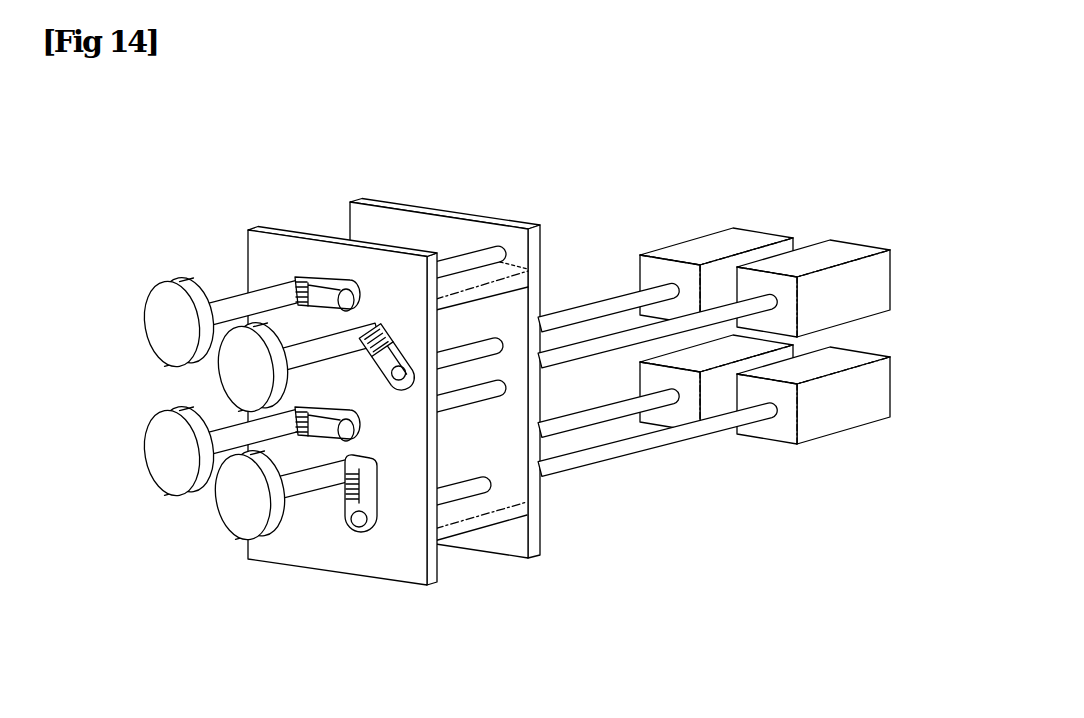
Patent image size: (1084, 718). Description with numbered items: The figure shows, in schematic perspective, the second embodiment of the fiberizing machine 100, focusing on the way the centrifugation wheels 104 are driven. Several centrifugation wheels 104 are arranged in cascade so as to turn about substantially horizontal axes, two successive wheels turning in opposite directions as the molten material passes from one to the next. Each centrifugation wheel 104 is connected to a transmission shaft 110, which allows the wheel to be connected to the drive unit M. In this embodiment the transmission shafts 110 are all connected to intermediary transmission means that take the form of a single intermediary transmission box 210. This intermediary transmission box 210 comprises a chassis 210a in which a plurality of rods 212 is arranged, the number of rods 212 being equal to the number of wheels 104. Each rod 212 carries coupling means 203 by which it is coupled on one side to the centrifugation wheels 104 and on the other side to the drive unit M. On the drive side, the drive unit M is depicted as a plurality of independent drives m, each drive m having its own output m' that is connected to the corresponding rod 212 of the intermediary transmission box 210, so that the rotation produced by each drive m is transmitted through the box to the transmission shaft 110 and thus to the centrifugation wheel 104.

The fiberizing machine 100 is at (426, 161).
The centrifugation wheel 104 is at (157, 315).
The transmission shaft 110 is at (233, 308).
The coupling means 203 is at (320, 260).
The intermediary transmission box 210 is at (373, 603).
The chassis 210a is at (433, 563).
The rod 212 is at (474, 510).
The drive unit M is at (802, 283).
The drive m is at (850, 288).
The output m' is at (657, 346).